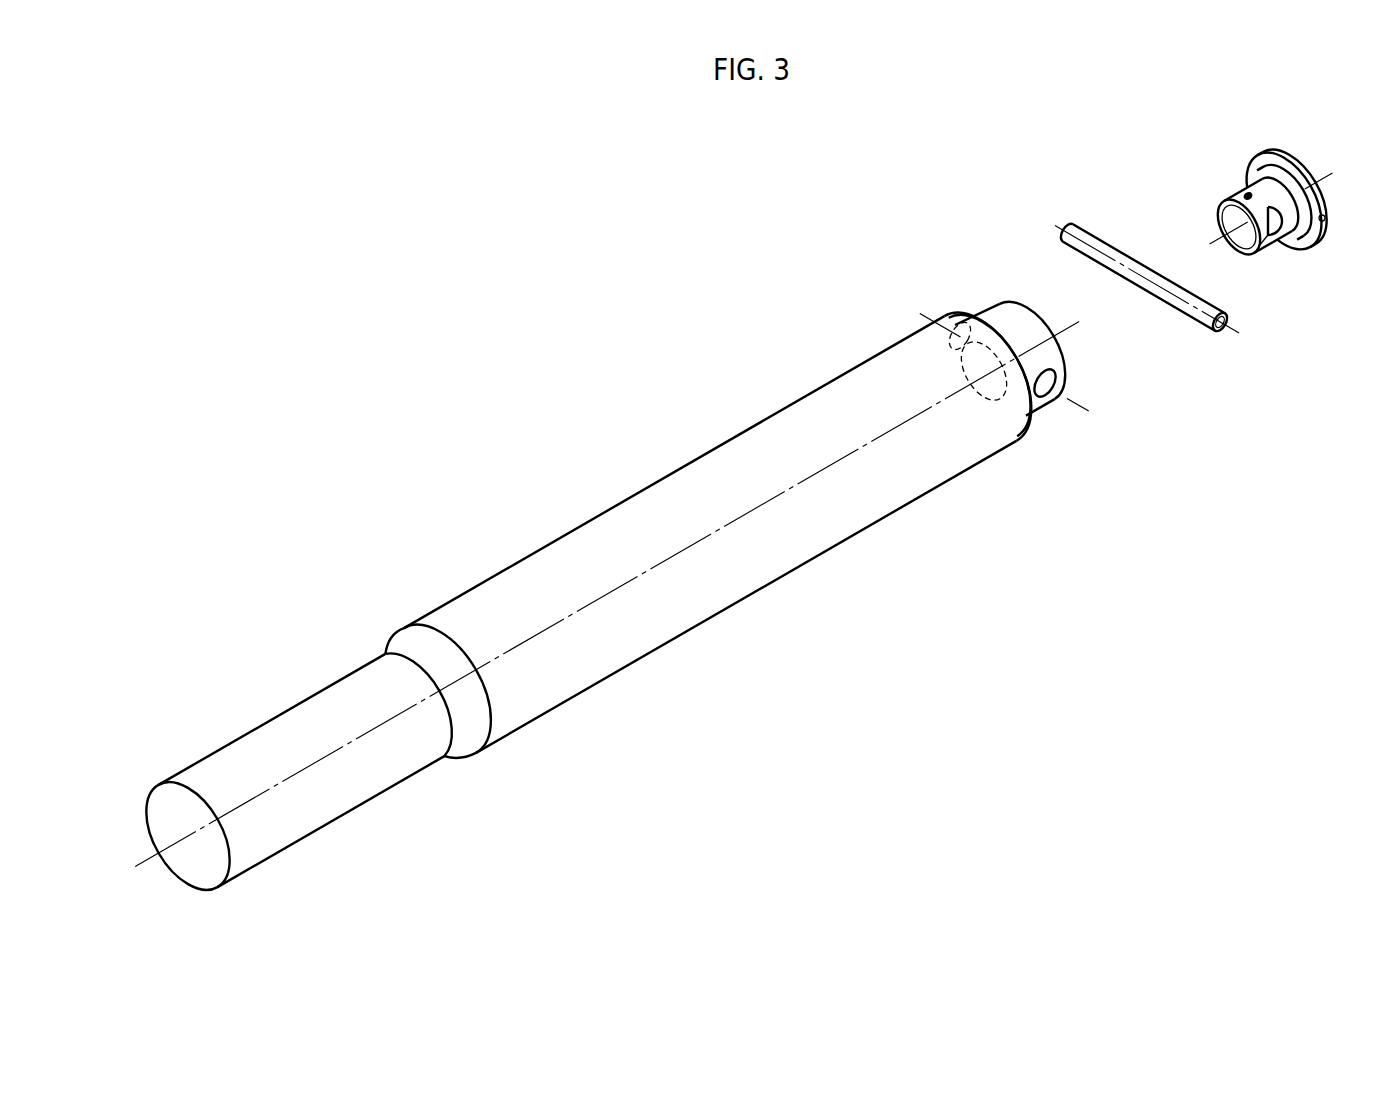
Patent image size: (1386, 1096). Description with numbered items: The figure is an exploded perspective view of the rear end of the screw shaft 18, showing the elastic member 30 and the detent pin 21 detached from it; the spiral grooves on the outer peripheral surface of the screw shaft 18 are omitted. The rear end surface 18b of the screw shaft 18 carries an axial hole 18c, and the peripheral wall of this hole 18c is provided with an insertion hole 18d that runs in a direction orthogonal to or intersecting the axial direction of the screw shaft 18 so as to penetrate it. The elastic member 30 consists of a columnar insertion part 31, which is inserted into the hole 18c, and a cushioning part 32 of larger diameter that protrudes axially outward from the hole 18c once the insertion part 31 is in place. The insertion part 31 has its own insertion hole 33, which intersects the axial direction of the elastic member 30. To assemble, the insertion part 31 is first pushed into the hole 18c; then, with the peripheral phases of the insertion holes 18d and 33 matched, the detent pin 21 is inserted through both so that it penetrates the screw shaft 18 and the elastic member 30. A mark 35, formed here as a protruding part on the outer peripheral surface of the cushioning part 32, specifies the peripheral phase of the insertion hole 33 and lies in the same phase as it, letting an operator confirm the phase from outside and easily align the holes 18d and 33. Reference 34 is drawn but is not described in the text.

The screw shaft 18 is at (692, 493).
The rear end surface 18b is at (1030, 298).
The axial hole 18c is at (992, 306).
The insertion hole 18d is at (935, 326).
The detent pin 21 is at (1103, 242).
The elastic member 30 is at (1286, 152).
The insertion part 31 is at (1267, 190).
The cushioning part 32 is at (1298, 167).
The insertion hole 33 is at (1288, 232).
The slit 34 is at (1243, 191).
The mark 35 is at (1328, 219).